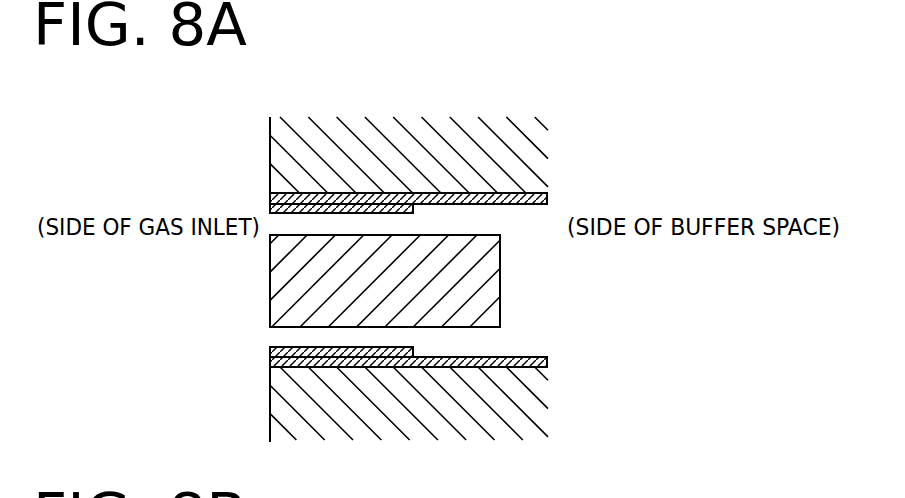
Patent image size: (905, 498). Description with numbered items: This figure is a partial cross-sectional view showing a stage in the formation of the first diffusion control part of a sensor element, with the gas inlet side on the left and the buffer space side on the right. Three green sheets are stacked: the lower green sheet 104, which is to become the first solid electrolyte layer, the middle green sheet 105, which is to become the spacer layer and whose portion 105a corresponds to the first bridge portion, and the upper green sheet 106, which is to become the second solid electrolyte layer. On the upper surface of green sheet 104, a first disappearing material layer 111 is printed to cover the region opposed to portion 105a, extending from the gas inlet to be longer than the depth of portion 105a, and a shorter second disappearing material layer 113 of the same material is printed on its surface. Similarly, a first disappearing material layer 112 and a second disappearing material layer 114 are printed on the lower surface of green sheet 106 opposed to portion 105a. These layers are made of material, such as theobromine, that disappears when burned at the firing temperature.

The green sheet 104 is at (500, 427).
The green sheet 105 is at (482, 248).
The portion corresponding to first bridge portion 105a is at (437, 278).
The green sheet 106 is at (530, 133).
The first disappearing material layer 111 is at (362, 367).
The first disappearing material layer 112 is at (370, 197).
The second disappearing material layer 113 is at (320, 367).
The second disappearing material layer 114 is at (338, 207).